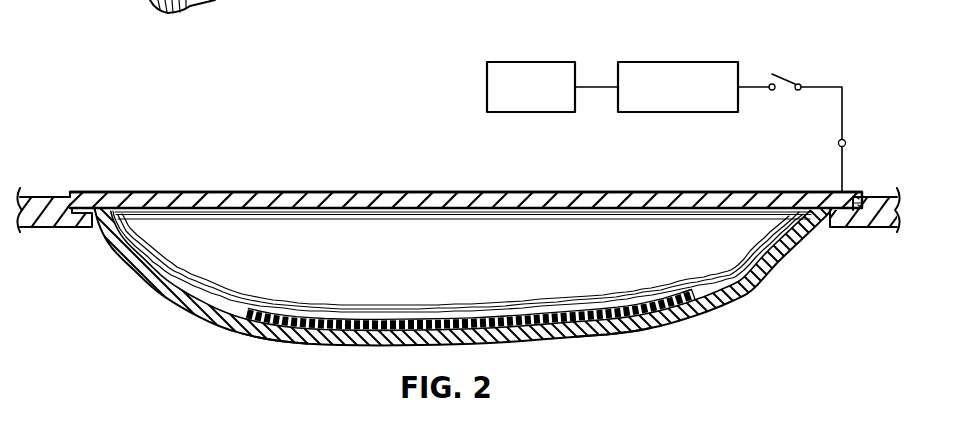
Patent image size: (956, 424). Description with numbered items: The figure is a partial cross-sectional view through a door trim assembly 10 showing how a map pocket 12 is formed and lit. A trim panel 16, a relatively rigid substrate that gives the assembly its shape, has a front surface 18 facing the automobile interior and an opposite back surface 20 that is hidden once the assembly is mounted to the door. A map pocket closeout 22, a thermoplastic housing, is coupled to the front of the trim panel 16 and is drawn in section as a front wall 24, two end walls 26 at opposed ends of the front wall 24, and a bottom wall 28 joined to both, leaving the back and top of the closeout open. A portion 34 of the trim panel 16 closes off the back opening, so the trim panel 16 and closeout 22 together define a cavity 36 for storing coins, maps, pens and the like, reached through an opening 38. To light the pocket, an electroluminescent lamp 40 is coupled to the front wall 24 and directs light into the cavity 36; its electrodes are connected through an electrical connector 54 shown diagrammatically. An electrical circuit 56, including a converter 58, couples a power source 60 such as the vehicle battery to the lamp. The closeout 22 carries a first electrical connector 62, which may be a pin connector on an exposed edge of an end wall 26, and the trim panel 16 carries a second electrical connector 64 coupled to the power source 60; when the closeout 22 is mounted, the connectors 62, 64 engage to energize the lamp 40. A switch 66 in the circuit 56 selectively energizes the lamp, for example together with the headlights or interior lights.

The door trim assembly 10 is at (92, 170).
The map pocket 12 is at (203, 278).
The trim panel 16 is at (325, 199).
The front surface 18 is at (43, 229).
The back surface 20 is at (172, 191).
The map pocket closeout 22 is at (628, 333).
The front wall 24 is at (292, 338).
The end walls 26 is at (121, 263).
The bottom wall 28 is at (334, 277).
The portion of trim panel 34 is at (400, 210).
The cavity 36 is at (606, 258).
The opening 38 is at (747, 275).
The electroluminescent lamp 40 is at (392, 318).
The electrical connector 54 is at (692, 310).
The electrical circuit 56 is at (785, 31).
The converter 58 is at (636, 62).
The power source 60 is at (496, 62).
The first electrical connector 62 is at (872, 191).
The second electrical connector 64 is at (846, 140).
The switch 66 is at (788, 75).